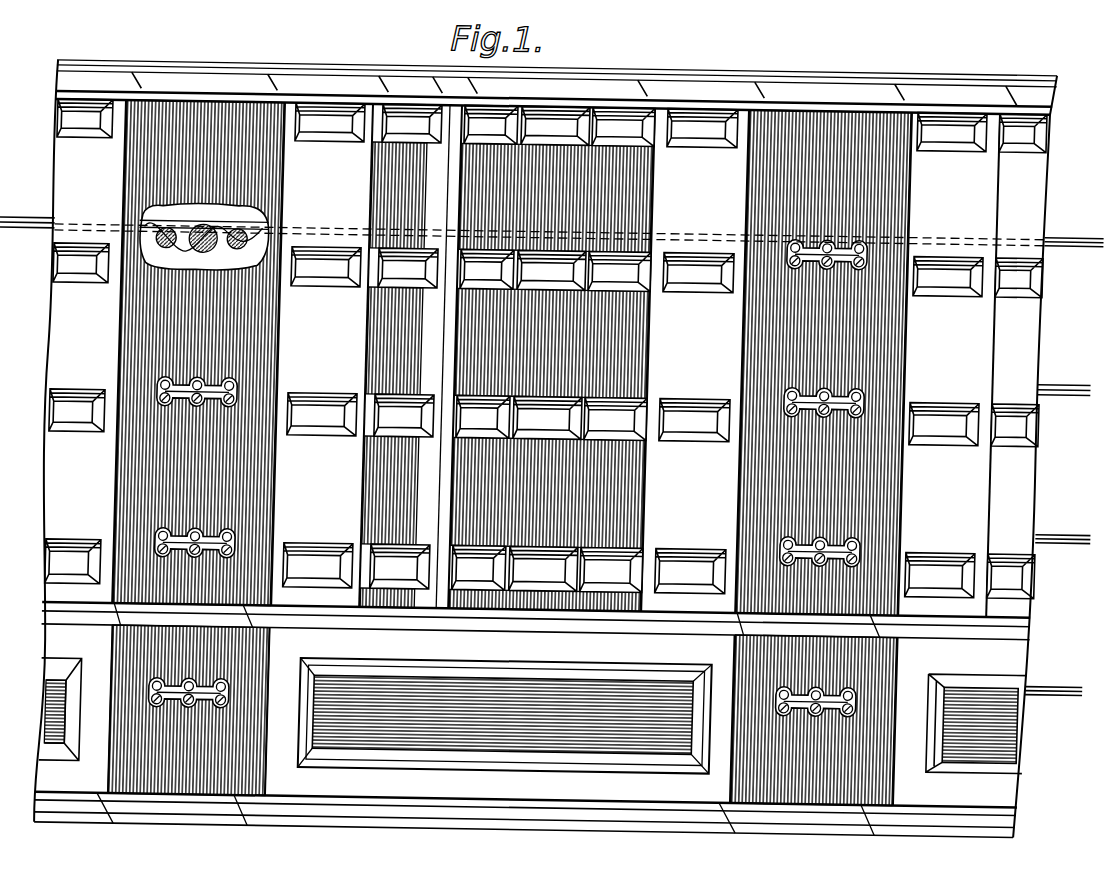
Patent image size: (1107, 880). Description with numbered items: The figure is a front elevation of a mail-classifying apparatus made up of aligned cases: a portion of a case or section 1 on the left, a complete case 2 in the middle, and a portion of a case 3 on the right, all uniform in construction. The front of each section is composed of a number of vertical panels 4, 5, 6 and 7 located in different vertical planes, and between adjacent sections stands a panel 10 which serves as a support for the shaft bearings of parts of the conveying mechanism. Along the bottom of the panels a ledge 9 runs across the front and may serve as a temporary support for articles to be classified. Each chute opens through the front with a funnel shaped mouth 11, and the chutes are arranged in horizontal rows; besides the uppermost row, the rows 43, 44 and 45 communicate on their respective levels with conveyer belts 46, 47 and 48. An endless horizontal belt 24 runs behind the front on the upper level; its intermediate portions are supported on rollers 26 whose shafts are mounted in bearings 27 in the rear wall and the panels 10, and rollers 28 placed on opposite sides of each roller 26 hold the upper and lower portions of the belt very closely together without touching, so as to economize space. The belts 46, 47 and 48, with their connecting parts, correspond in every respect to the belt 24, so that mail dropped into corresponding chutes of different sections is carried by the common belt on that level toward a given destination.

The portion of a case or section 1 is at (77, 63).
The complete case 2 is at (589, 63).
The portion of a case 3 is at (974, 64).
The vertical panel 4 is at (322, 355).
The vertical panel 5 is at (404, 356).
The vertical panel 6 is at (551, 358).
The vertical panel 7 is at (695, 360).
The ledge 9 is at (674, 598).
The panel 10 is at (188, 99).
The funnel shaped mouth 11 is at (332, 102).
The endless horizontal belt 24 is at (15, 220).
The roller 26 is at (193, 217).
The bearing 27 is at (839, 222).
The roller 28 is at (161, 245).
The horizontal row of chutes 43 is at (698, 294).
The horizontal row of chutes 44 is at (694, 442).
The horizontal row of chutes 45 is at (690, 582).
The conveyer belt 46 is at (1065, 374).
The conveyer belt 47 is at (1063, 523).
The conveyer belt 48 is at (1054, 674).